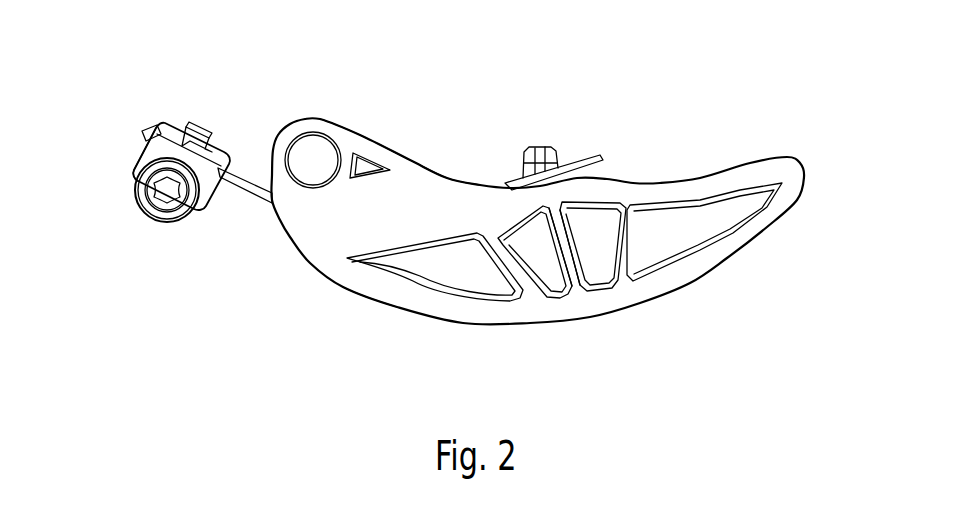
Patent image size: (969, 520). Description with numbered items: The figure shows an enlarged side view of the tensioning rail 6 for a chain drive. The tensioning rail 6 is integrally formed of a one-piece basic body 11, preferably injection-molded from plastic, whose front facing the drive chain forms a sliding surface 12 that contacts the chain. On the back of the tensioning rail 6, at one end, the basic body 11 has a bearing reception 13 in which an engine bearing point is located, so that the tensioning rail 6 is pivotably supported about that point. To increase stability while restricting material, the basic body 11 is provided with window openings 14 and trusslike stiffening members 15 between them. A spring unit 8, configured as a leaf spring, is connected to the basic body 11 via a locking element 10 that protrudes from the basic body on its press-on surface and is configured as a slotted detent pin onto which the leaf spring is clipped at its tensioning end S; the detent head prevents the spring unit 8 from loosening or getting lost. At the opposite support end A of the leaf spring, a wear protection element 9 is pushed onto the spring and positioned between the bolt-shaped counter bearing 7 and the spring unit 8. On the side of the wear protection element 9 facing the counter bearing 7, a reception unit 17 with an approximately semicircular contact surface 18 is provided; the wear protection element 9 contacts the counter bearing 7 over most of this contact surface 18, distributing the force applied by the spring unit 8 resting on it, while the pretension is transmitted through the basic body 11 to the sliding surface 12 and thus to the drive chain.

The tensioning rail 6 is at (688, 123).
The bolt-shaped counter bearing 7 is at (143, 215).
The spring unit 8 is at (246, 182).
The wear protection element 9 is at (160, 150).
The locking element 10 is at (535, 150).
The basic body 11 is at (432, 206).
The sliding surface 12 is at (450, 321).
The bearing reception 13 is at (305, 183).
The window openings 14 is at (368, 161).
The trusslike stiffening members 15 is at (540, 303).
The reception unit 17 is at (137, 165).
The contact surface 18 is at (177, 180).
The support end A is at (152, 122).
The tensioning end S is at (585, 140).